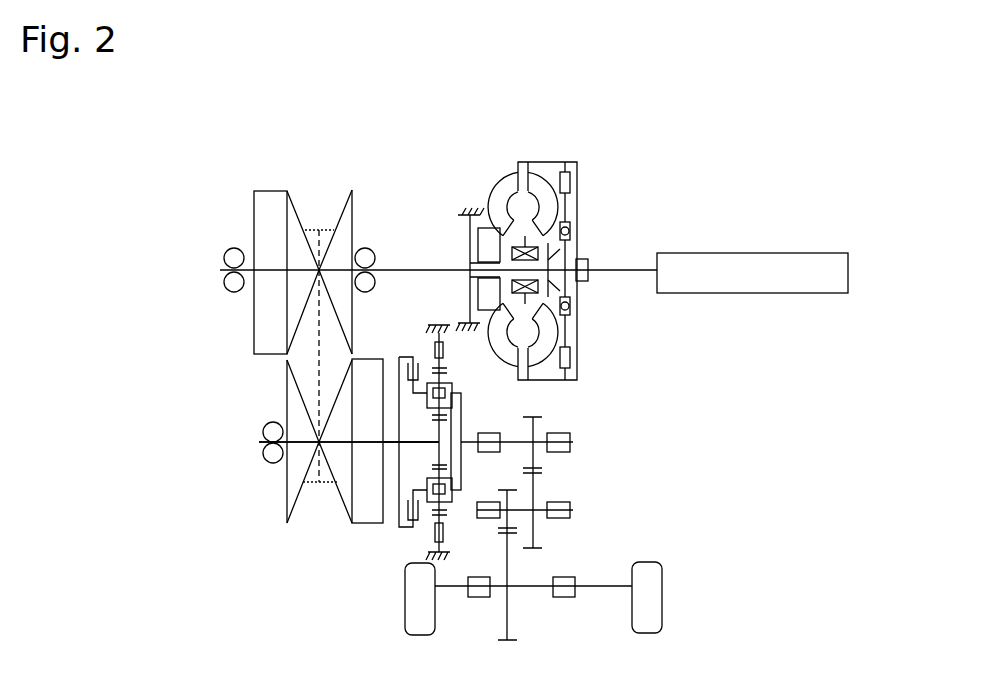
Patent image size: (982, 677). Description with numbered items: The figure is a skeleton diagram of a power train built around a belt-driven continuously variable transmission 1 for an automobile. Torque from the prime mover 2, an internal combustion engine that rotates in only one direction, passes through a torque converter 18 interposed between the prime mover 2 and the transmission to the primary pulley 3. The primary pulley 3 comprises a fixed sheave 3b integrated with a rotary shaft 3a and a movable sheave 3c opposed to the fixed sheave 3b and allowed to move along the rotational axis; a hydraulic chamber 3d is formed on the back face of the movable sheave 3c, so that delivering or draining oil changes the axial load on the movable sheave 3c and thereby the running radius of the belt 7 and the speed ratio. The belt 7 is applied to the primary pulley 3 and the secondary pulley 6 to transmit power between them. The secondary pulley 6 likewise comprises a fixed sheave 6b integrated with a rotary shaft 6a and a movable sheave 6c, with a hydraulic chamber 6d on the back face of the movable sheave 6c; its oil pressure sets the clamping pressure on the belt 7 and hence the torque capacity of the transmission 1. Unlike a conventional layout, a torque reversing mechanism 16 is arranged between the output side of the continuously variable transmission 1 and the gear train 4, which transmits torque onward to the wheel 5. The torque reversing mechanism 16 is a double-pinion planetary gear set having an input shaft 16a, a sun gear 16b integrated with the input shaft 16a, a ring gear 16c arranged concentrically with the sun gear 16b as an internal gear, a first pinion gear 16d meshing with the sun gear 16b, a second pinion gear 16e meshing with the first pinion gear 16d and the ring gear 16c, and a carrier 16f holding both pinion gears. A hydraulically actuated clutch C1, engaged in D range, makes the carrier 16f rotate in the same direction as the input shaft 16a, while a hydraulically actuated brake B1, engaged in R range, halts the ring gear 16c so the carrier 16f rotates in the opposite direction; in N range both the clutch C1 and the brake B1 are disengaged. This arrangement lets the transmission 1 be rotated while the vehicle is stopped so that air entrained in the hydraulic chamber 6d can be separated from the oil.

The belt-driven continuously variable transmission 1 is at (195, 275).
The prime mover 2 is at (833, 253).
The primary pulley 3 is at (340, 176).
The rotary shaft 3a is at (300, 268).
The fixed sheave 3b is at (340, 233).
The movable sheave 3c is at (287, 300).
The hydraulic chamber 3d is at (257, 237).
The gear train 4 is at (614, 479).
The wheel 5 is at (430, 622).
The secondary pulley 6 is at (312, 514).
The rotary shaft 6a is at (298, 450).
The fixed sheave 6b is at (292, 407).
The movable sheave 6c is at (347, 493).
The hydraulic chamber 6d is at (352, 522).
The belt 7 is at (320, 366).
The torque reversing mechanism 16 is at (480, 398).
The input shaft 16a is at (412, 440).
The sun gear 16b is at (440, 452).
The ring gear 16c is at (447, 360).
The first pinion gear 16d is at (442, 480).
The second pinion gear 16e is at (435, 510).
The carrier 16f is at (460, 435).
The torque converter 18 is at (564, 148).
The brake B1 is at (432, 330).
The clutch C1 is at (410, 370).